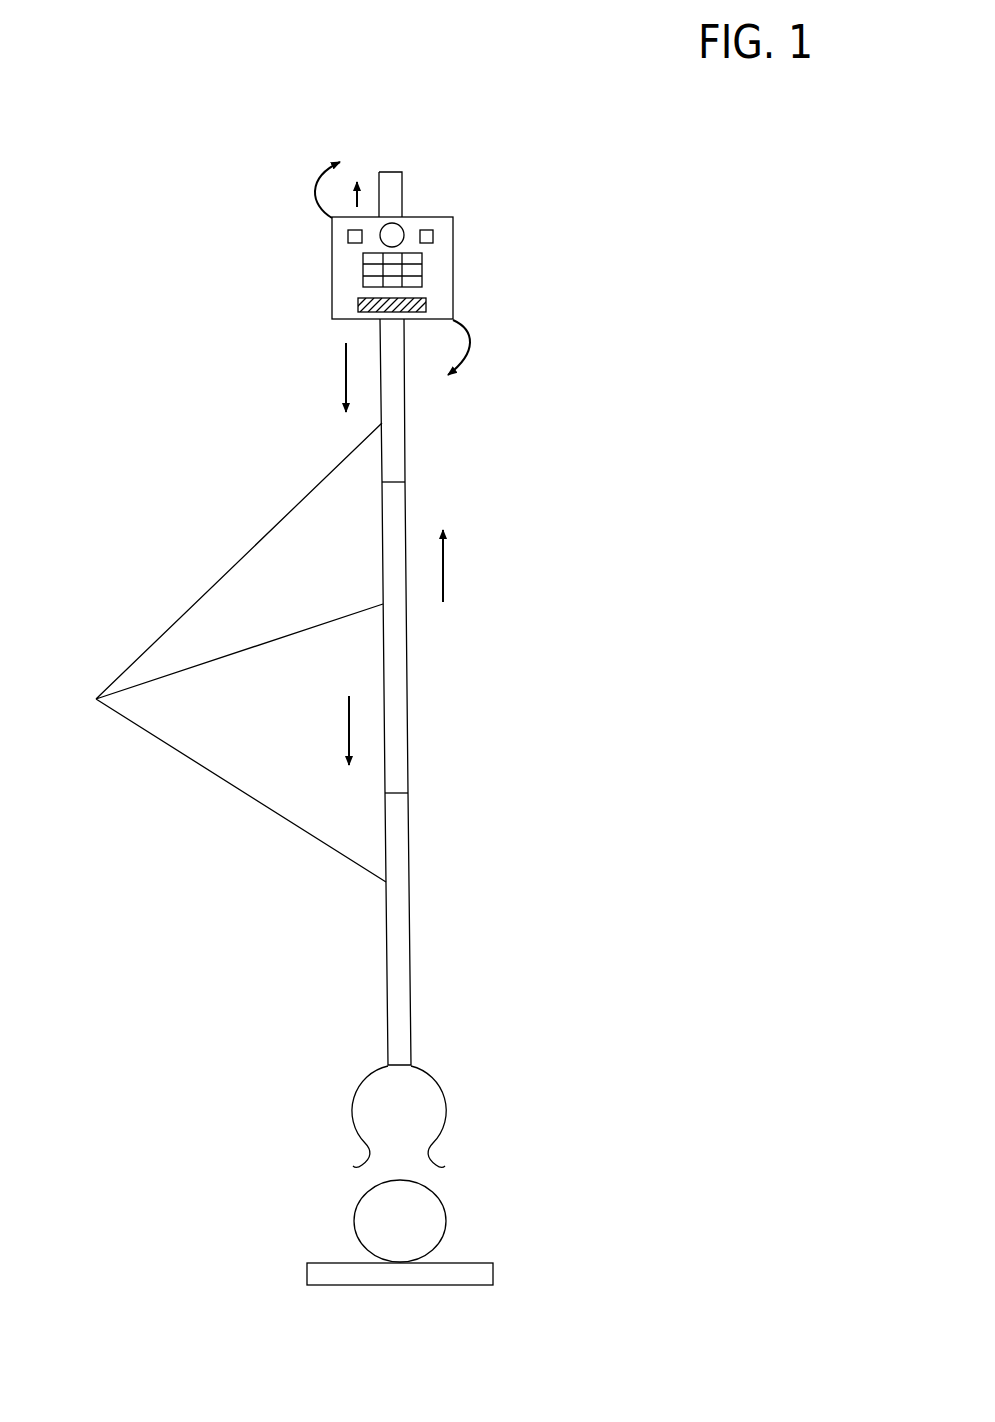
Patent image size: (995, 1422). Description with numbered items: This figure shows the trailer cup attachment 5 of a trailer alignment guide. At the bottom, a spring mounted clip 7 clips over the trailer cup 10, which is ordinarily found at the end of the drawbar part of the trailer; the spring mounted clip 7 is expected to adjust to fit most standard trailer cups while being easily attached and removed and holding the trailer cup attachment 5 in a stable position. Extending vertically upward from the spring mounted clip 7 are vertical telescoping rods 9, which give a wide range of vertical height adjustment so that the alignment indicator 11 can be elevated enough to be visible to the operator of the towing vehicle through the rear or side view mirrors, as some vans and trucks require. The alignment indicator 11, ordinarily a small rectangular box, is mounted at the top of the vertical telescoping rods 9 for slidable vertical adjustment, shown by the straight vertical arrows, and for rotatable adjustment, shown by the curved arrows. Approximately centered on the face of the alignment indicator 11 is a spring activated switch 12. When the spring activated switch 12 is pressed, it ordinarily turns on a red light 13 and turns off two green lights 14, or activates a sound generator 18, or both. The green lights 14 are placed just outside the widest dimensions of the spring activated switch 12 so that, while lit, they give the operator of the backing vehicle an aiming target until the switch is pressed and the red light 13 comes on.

The trailer cup attachment 5 is at (473, 714).
The spring mounted clip 7 is at (448, 1120).
The vertical telescoping rods 9 is at (221, 652).
The trailer cup 10 is at (447, 1233).
The alignment indicator 11 is at (502, 269).
The spring activated switch 12 is at (363, 272).
The red light 13 is at (402, 228).
The green lights 14 is at (348, 237).
The sound generator 18 is at (426, 301).